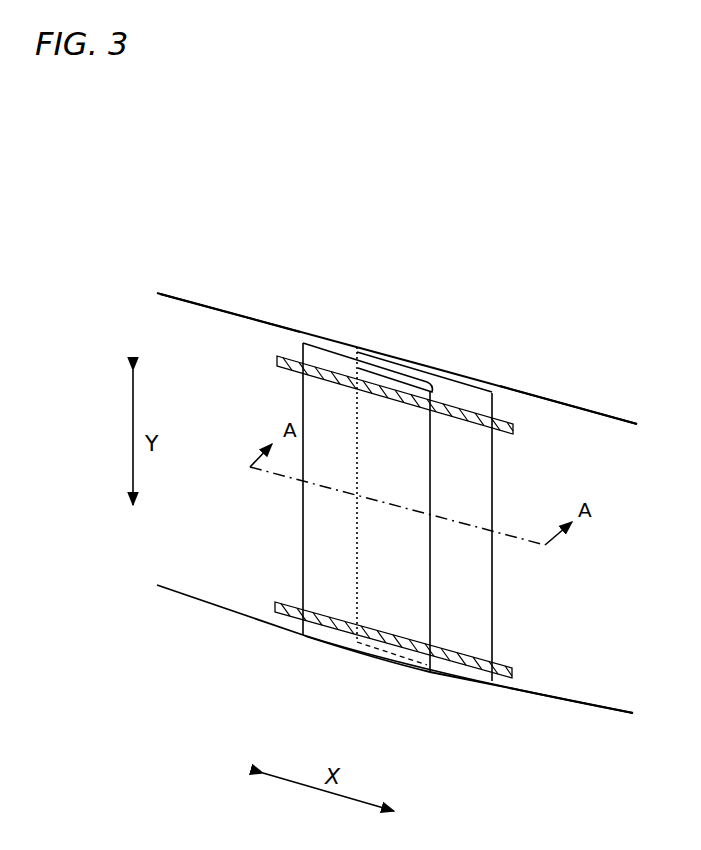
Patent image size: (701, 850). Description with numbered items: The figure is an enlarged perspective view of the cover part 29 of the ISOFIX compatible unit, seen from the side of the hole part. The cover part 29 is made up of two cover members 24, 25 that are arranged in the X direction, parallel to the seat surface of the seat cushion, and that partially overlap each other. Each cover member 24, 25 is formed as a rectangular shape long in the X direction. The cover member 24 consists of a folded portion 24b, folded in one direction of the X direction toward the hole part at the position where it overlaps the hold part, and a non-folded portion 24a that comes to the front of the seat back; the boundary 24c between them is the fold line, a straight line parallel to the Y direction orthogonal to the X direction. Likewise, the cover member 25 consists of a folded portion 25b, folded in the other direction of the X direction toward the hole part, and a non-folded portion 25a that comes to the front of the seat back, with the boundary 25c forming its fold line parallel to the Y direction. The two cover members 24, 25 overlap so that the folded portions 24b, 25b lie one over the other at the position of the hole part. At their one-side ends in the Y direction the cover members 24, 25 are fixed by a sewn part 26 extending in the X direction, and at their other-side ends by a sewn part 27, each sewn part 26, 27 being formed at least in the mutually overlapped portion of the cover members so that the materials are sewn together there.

The cover member 24 is at (242, 314).
The non-folded portion 24a is at (220, 344).
The folded portion 24b is at (397, 605).
The boundary 24c is at (430, 452).
The cover member 25 is at (577, 404).
The non-folded portion 25a is at (612, 440).
The folded portion 25b is at (472, 565).
The boundary 25c is at (360, 349).
The sewn part 26 is at (284, 360).
The sewn part 27 is at (475, 660).
The cover part 29 is at (408, 212).